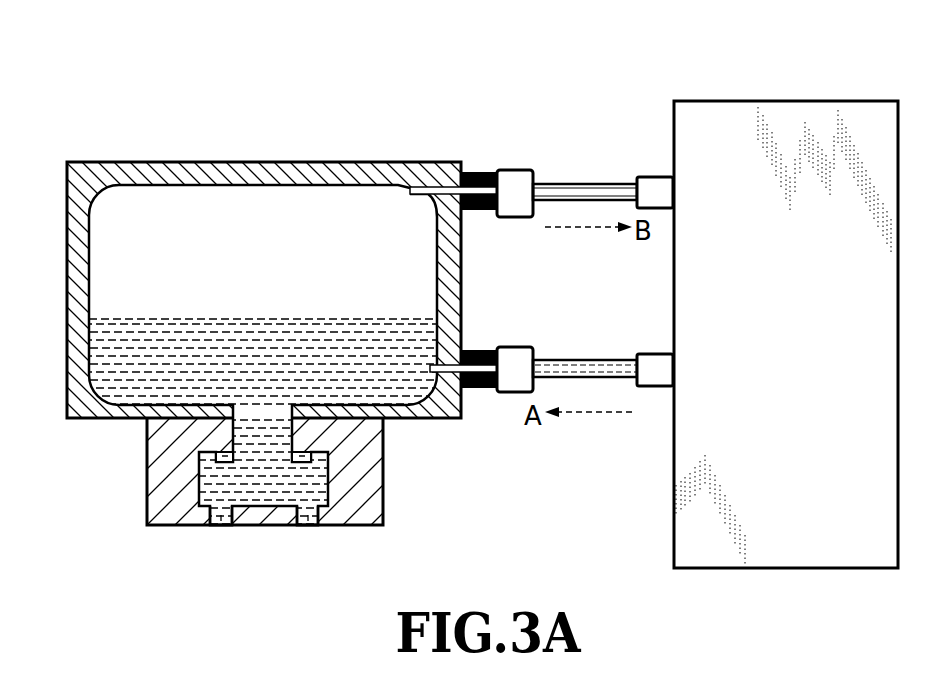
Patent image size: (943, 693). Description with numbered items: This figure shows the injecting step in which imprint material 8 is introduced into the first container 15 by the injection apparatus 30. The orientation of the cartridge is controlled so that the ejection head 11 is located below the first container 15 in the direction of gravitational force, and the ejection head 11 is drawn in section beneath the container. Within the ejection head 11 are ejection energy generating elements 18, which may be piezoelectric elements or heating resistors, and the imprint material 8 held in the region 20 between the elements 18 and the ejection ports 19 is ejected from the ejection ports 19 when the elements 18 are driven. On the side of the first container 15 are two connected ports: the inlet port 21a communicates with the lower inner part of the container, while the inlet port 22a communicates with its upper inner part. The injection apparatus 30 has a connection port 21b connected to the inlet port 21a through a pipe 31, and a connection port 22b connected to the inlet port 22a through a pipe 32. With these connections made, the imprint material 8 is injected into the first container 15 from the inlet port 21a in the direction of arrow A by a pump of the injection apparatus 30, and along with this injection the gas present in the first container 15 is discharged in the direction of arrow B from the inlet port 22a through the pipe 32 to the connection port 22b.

The first container 15 is at (82, 258).
The imprint material 8 is at (105, 354).
The ejection head 11 is at (147, 462).
The ejection energy generating element 18 is at (300, 450).
The region 20 is at (315, 480).
The ejection port 19 is at (303, 530).
The inlet port 22a is at (513, 170).
The pipe 32 is at (585, 184).
The connection port 22b is at (648, 177).
The inlet port 21a is at (513, 347).
The pipe 31 is at (585, 360).
The connection port 21b is at (648, 354).
The injection apparatus 30 is at (760, 92).